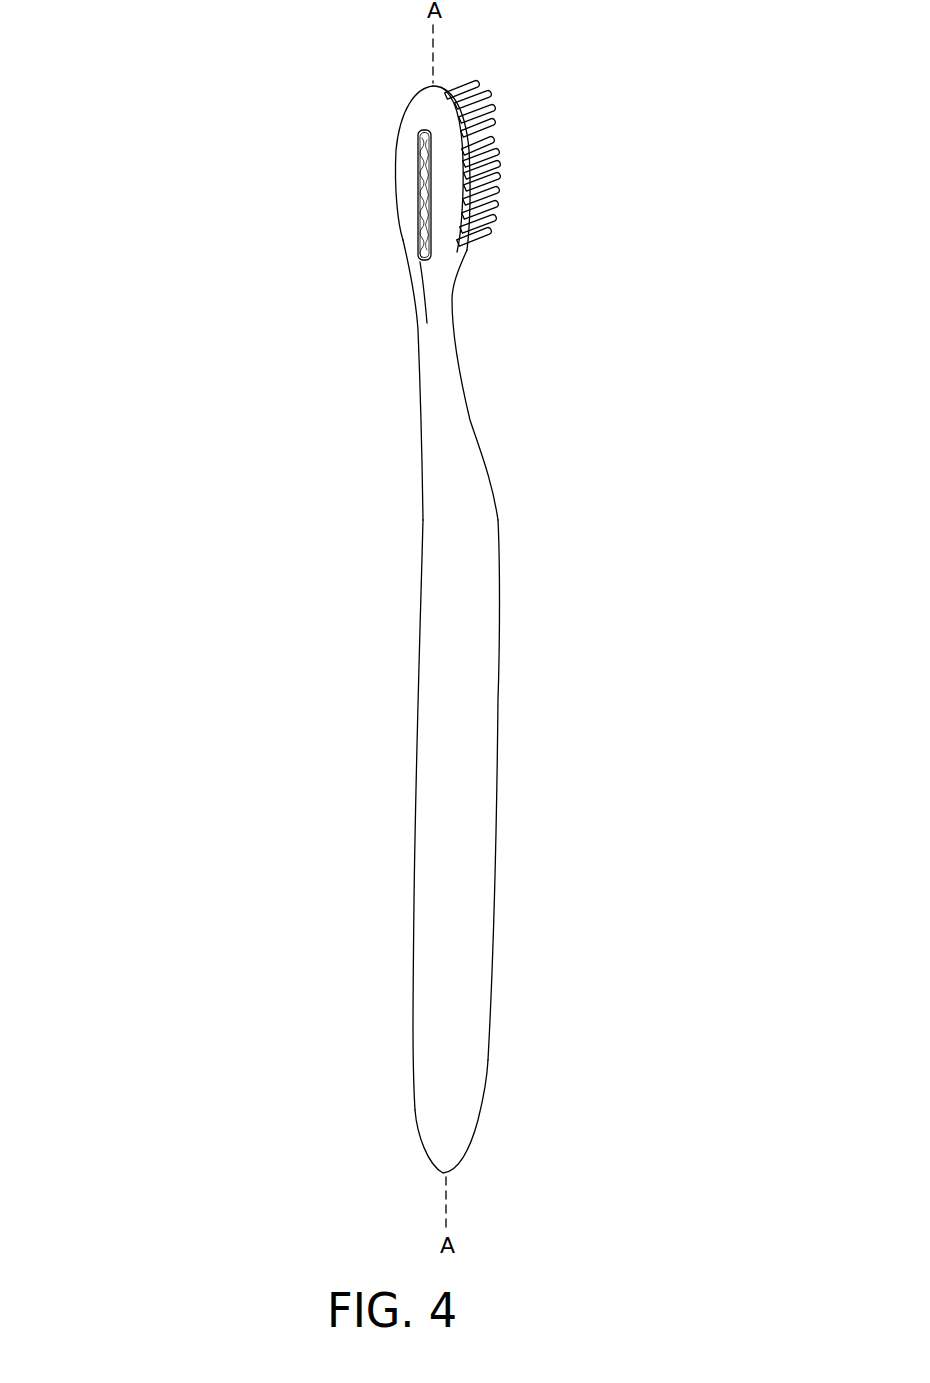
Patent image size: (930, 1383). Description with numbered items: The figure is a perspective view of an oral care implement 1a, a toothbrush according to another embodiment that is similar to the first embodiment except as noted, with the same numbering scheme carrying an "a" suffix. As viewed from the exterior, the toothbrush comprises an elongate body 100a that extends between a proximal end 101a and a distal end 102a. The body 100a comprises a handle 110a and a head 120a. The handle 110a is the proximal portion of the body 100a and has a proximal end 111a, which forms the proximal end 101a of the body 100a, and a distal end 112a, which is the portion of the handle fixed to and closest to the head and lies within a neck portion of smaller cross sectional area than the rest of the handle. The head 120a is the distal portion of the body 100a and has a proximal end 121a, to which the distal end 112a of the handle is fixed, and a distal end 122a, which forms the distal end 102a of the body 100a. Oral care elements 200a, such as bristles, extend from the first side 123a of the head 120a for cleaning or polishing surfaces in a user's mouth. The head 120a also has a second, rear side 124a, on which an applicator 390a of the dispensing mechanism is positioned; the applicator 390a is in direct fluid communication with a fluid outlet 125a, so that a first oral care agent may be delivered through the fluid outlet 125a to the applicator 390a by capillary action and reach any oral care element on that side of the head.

The oral care implement 1a is at (178, 391).
The body 100a is at (453, 858).
The proximal end of body 101a is at (438, 1170).
The distal end of body 102a is at (415, 105).
The handle 110a is at (467, 727).
The proximal end of handle 111a is at (451, 1116).
The distal end of handle 112a is at (437, 427).
The head 120a is at (407, 230).
The proximal end of head 121a is at (442, 363).
The distal end of head 122a is at (432, 169).
The first side of head 123a is at (497, 187).
The second side of head 124a is at (407, 194).
The fluid outlet 125a is at (425, 163).
The oral care elements 200a is at (497, 152).
The applicator 390a is at (423, 236).